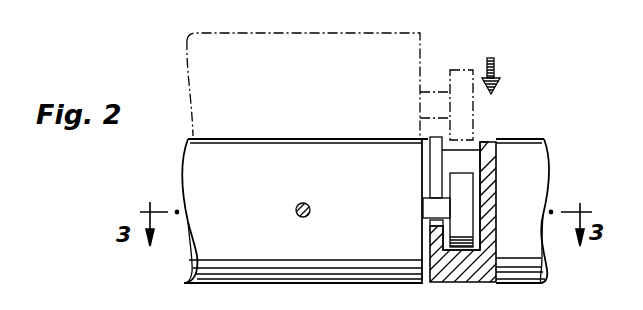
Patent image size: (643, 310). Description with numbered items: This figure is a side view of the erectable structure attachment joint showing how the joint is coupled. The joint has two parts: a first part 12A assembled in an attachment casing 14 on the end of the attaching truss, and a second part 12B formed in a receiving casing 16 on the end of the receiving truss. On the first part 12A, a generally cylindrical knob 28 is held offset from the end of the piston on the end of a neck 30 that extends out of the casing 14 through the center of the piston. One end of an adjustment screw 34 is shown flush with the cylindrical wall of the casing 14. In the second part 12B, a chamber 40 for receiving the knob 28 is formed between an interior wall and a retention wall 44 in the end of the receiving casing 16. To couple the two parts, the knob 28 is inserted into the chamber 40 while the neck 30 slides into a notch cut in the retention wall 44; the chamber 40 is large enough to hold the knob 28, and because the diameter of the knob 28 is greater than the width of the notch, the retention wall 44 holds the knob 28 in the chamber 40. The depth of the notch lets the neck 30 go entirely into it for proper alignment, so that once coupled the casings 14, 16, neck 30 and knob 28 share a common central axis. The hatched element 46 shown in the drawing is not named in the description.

The first part 12A is at (394, 127).
The second part 12B is at (539, 127).
The attachment casing 14 is at (302, 211).
The receiving casing 16 is at (522, 211).
The knob 28 is at (466, 71).
The neck 30 is at (446, 208).
The adjustment screw 34 is at (308, 217).
The chamber 40 is at (458, 158).
The retention wall 44 is at (430, 236).
The clamp block 46 is at (488, 241).